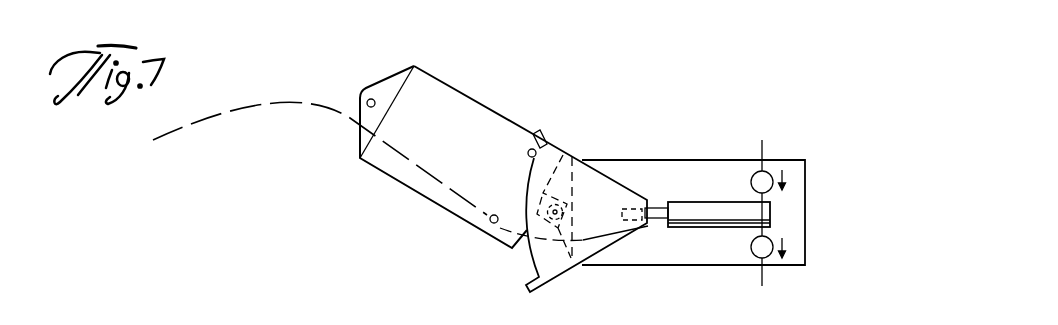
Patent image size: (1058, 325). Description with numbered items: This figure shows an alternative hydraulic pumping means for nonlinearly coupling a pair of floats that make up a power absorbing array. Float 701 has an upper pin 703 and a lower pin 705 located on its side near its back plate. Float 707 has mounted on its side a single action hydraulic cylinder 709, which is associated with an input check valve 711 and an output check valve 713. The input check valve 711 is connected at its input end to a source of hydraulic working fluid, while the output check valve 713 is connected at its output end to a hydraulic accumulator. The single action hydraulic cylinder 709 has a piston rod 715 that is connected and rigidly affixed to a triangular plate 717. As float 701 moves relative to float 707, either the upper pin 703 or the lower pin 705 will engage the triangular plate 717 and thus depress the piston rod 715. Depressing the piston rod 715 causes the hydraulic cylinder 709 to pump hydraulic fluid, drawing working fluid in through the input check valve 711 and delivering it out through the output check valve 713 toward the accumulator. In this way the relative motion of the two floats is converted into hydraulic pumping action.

The float 701 is at (437, 87).
The upper pin 703 is at (527, 153).
The lower pin 705 is at (490, 221).
The float 707 is at (797, 164).
The single action hydraulic cylinder 709 is at (760, 211).
The input check valve 711 is at (752, 174).
The output check valve 713 is at (750, 250).
The piston rod 715 is at (657, 202).
The triangular plate 717 is at (590, 180).